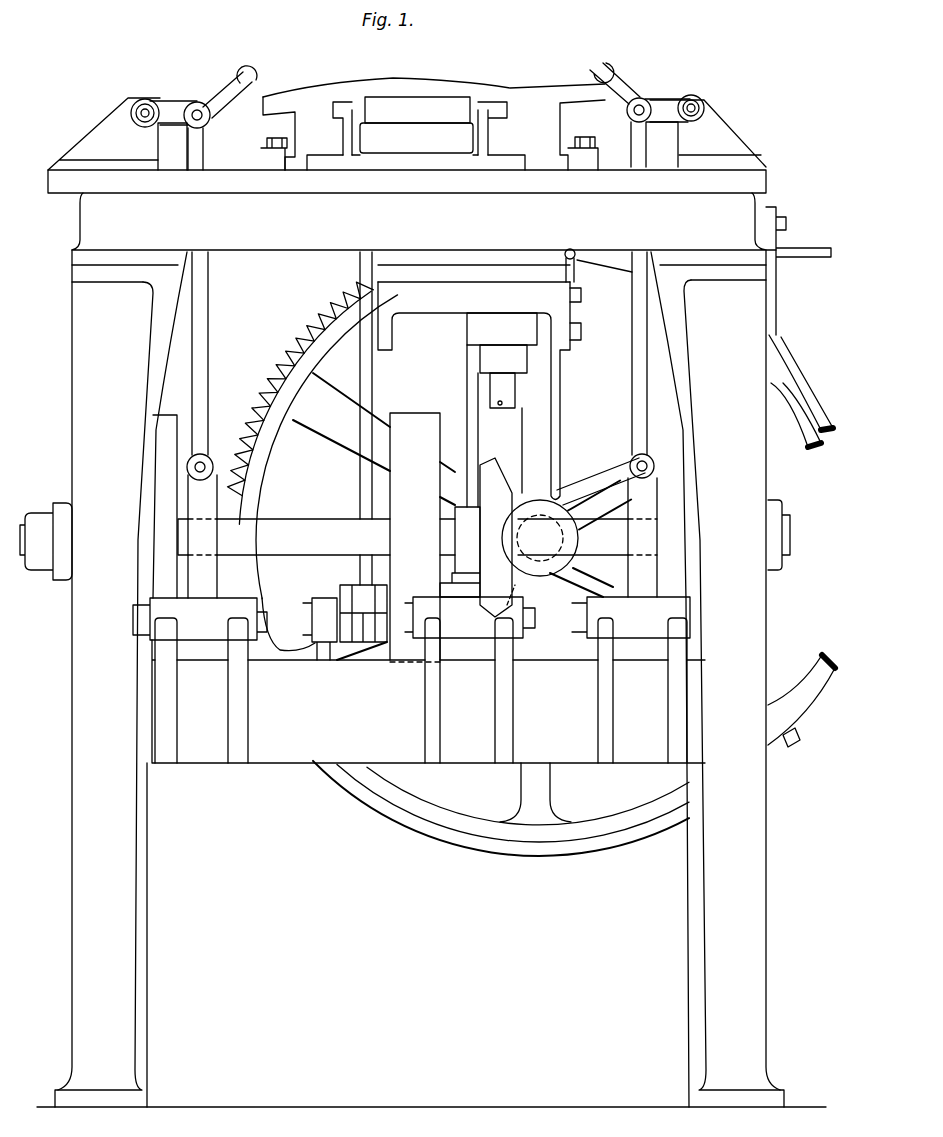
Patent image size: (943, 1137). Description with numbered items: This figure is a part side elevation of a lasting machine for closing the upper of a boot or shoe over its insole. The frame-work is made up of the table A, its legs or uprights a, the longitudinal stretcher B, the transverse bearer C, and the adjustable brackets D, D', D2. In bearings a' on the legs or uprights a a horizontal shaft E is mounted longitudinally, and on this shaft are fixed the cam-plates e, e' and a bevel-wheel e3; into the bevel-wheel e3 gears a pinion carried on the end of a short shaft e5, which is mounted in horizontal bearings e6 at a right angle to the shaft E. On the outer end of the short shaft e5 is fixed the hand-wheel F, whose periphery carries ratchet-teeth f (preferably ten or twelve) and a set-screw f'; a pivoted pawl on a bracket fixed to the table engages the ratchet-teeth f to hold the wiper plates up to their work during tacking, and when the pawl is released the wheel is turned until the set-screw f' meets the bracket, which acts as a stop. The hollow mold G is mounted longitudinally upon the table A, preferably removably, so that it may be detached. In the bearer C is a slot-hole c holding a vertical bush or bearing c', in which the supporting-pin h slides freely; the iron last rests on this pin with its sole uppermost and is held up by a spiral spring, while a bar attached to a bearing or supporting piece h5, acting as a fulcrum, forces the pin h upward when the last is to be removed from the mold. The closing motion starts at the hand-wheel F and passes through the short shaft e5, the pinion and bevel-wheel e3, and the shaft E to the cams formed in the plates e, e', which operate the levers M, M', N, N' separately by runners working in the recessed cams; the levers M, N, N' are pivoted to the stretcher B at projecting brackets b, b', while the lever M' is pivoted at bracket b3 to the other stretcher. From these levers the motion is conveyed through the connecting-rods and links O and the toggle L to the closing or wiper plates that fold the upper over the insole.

The table A is at (412, 210).
The legs or uprights a is at (419, 678).
The bearings a' is at (415, 554).
The longitudinal stretcher B is at (428, 701).
The projecting bracket b is at (201, 690).
The projecting bracket b' is at (469, 690).
The projecting bracket b3 is at (668, 695).
The transverse bearer C is at (505, 374).
The slot-hole c is at (502, 329).
The vertical bush or bearing c' is at (503, 359).
The adjustable bracket D is at (129, 134).
The adjustable bracket D' is at (416, 138).
The adjustable bracket D2 is at (708, 133).
The horizontal shaft E is at (417, 537).
The cam-plate e is at (165, 506).
The cam-plate e' is at (415, 537).
The bevel-wheel e3 is at (477, 537).
The short shaft e5 is at (540, 538).
The horizontal bearings e6 is at (568, 497).
The hand-wheel F is at (270, 485).
The ratchet-teeth f is at (301, 389).
The set-screw f' is at (801, 711).
The hollow mold G is at (433, 124).
The supporting-pin h is at (502, 390).
The bearing or supporting piece h5 is at (812, 250).
The toggle L is at (220, 84).
The lever M is at (200, 619).
The lever M' is at (345, 627).
The lever N is at (470, 617).
The lever N' is at (631, 617).
The connecting-rods and links O is at (631, 382).